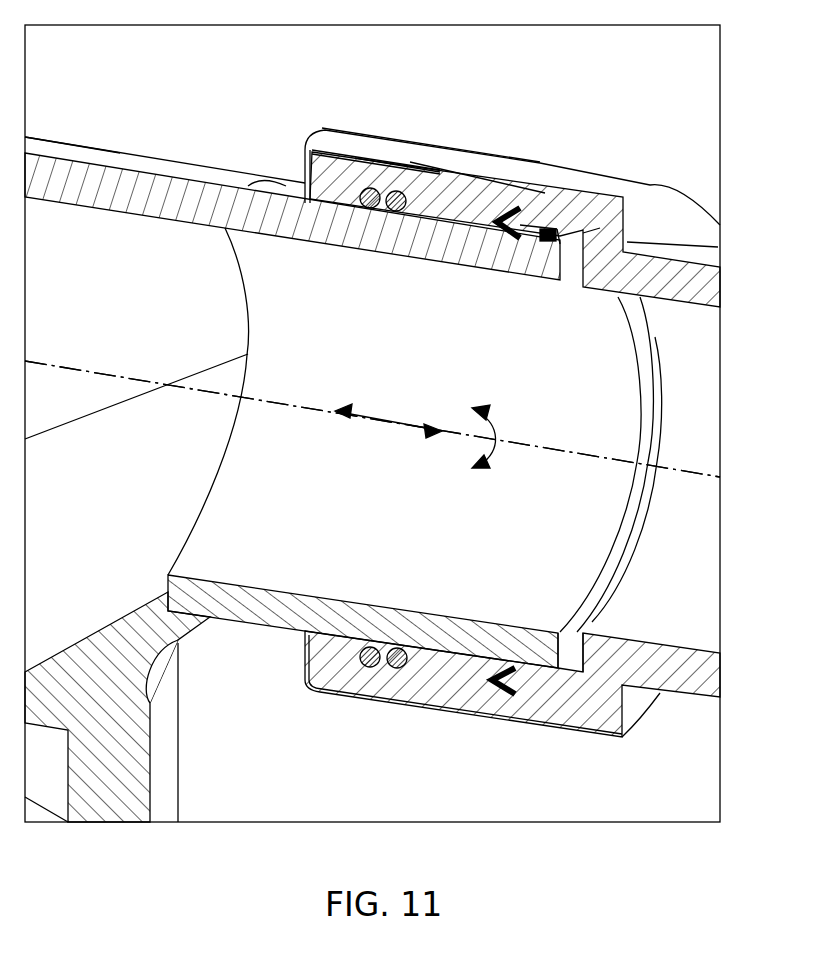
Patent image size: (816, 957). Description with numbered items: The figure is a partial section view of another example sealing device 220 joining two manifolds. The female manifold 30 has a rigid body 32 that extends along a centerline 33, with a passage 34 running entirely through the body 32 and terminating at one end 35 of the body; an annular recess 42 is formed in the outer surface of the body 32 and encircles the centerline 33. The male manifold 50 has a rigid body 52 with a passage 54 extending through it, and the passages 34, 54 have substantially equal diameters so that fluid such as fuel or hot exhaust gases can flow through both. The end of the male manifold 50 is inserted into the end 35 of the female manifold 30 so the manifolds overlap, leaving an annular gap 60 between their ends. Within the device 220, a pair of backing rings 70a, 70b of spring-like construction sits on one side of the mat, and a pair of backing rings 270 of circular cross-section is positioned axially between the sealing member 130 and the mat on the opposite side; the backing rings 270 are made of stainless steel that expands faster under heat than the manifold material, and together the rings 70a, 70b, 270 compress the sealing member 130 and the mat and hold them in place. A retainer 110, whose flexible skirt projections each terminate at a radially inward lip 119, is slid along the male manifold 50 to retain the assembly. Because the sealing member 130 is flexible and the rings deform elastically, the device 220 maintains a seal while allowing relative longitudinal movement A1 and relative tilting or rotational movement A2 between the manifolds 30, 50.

The female manifold 30 is at (612, 150).
The body 32 is at (628, 210).
The centerline 33 is at (95, 372).
The end 35 is at (372, 401).
The passage 34 is at (640, 607).
The annular recess 42 is at (420, 700).
The male manifold 50 is at (190, 118).
The body 52 is at (132, 188).
The passage 54 is at (284, 560).
The gap 60 is at (572, 680).
The backing ring 70a is at (500, 240).
The backing ring 70b is at (522, 240).
The retainer 110 is at (325, 108).
The lip 119 is at (446, 152).
The sealing member 130 is at (422, 166).
The sealing device 220 is at (285, 145).
The backing ring 270 is at (370, 188).
The relative longitudinal movement A1 is at (382, 417).
The relative tilting/rotational movement A2 is at (495, 430).